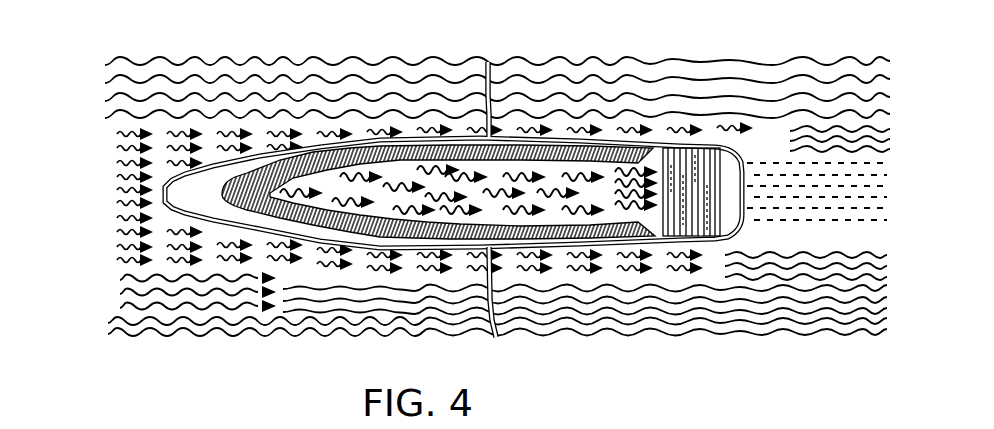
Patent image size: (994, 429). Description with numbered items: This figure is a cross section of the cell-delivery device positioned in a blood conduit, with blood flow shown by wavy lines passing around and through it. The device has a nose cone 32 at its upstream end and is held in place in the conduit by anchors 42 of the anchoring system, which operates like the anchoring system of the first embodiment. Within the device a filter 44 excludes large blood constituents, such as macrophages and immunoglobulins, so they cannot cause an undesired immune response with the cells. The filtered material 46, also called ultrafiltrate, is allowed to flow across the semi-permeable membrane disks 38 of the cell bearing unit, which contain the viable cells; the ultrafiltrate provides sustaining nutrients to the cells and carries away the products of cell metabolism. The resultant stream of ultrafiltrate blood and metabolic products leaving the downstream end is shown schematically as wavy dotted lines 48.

The nose cone 32 is at (163, 184).
The semi-permeable membrane disks 38 is at (703, 173).
The anchors 42 is at (493, 95).
The filter 44 is at (221, 196).
The filtered material 46 is at (413, 186).
The wavy dotted lines 48 is at (785, 170).